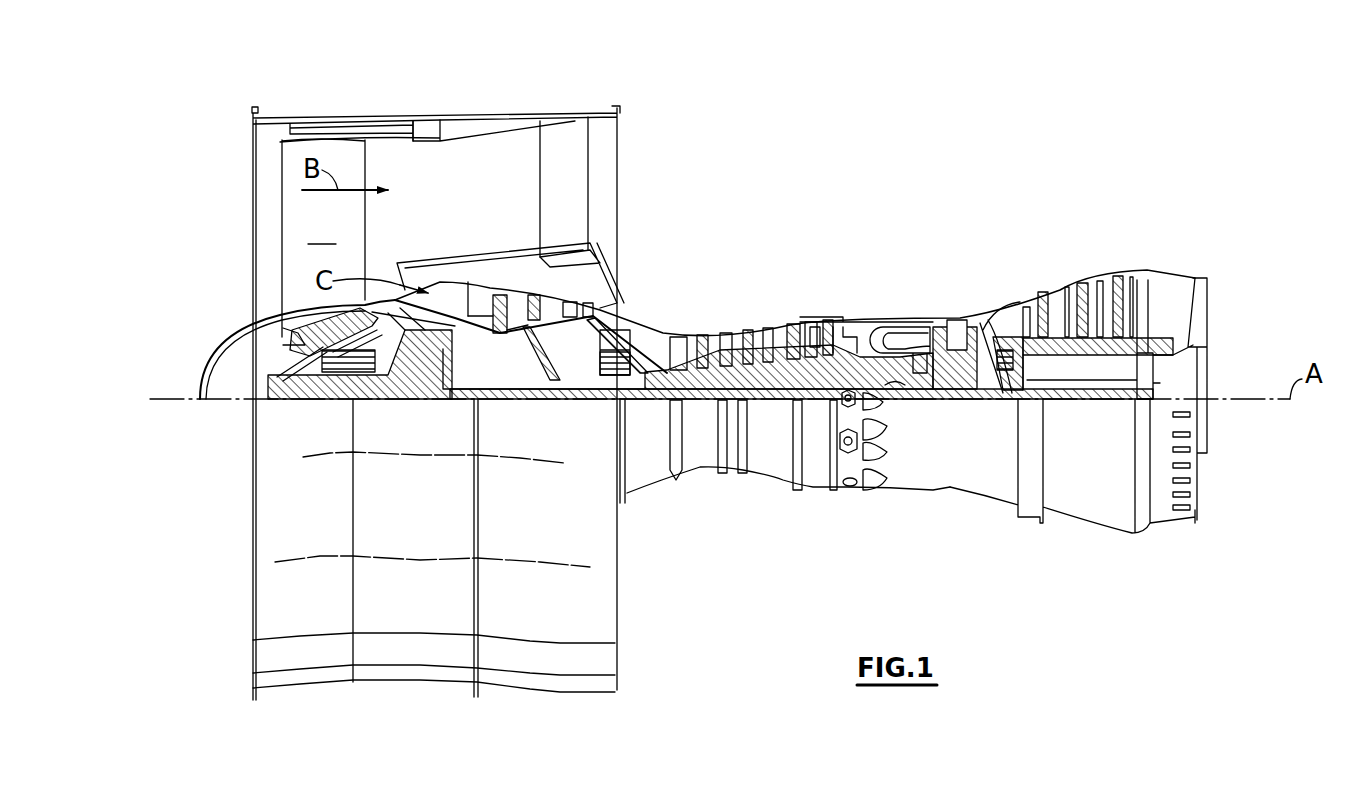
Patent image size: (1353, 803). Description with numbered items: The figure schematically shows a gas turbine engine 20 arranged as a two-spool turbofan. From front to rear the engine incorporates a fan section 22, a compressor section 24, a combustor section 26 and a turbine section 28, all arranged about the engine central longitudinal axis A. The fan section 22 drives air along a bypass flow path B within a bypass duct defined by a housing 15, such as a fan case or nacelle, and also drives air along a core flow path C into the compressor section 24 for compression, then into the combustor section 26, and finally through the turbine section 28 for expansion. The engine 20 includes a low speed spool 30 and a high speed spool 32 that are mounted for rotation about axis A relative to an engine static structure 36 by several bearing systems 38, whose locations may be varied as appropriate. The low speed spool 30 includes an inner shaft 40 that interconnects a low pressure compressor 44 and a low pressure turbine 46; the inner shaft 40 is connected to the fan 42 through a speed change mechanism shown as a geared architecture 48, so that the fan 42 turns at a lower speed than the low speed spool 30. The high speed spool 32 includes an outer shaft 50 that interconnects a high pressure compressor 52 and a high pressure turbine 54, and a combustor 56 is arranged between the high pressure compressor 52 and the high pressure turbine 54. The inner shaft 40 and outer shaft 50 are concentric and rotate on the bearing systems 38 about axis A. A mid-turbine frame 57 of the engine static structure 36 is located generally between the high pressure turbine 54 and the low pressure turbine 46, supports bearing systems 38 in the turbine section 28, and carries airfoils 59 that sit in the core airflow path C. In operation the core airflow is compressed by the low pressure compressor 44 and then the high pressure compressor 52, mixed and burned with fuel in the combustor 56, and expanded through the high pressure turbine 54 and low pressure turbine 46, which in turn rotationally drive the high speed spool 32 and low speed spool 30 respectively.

The housing 15 is at (437, 115).
The gas turbine engine 20 is at (900, 162).
The fan section 22 is at (359, 102).
The compressor section 24 is at (674, 303).
The combustor section 26 is at (889, 294).
The turbine section 28 is at (1037, 254).
The low speed spool 30 is at (772, 412).
The high speed spool 32 is at (817, 350).
The engine static structure 36 is at (812, 494).
The bearing systems 38 is at (573, 385).
The inner shaft 40 is at (630, 400).
The fan 42 is at (380, 418).
The low pressure compressor 44 is at (540, 303).
The low pressure turbine 46 is at (1080, 278).
The geared architecture 48 is at (432, 385).
The outer shaft 50 is at (897, 384).
The high pressure compressor 52 is at (740, 330).
The high pressure turbine 54 is at (957, 320).
The combustor 56 is at (890, 340).
The mid-turbine frame 57 is at (1008, 296).
The airfoils 59 is at (1005, 350).